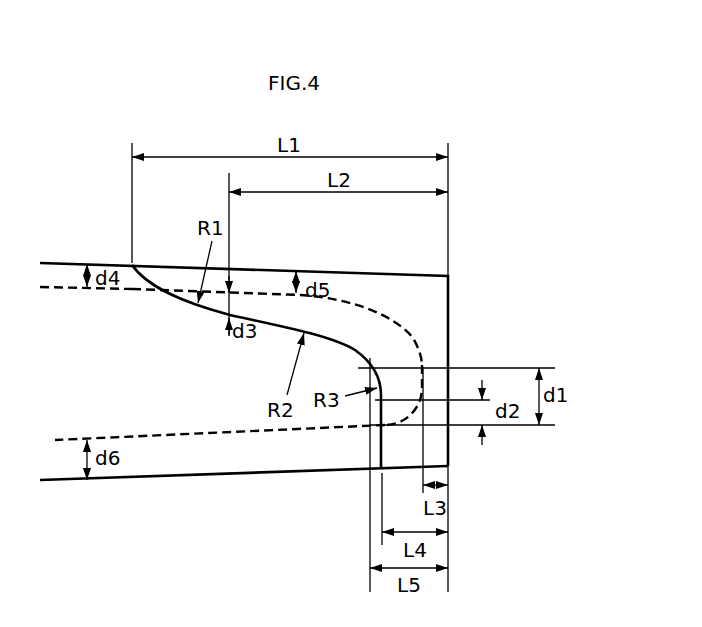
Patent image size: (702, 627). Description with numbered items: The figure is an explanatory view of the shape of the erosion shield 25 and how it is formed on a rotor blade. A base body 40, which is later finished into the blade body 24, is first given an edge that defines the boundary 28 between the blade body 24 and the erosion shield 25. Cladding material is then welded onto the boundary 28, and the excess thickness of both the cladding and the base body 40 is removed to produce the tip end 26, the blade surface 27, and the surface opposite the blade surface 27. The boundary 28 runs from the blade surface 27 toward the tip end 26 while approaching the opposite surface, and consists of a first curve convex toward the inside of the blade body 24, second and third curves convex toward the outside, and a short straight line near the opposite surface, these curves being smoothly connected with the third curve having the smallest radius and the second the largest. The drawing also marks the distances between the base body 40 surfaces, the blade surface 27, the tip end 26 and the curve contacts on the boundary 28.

The blade body 24 is at (162, 330).
The erosion shield 25 is at (348, 318).
The tip end 26 is at (420, 338).
The blade surface 27 is at (129, 288).
The boundary 28 is at (268, 323).
The base body 40 is at (397, 273).